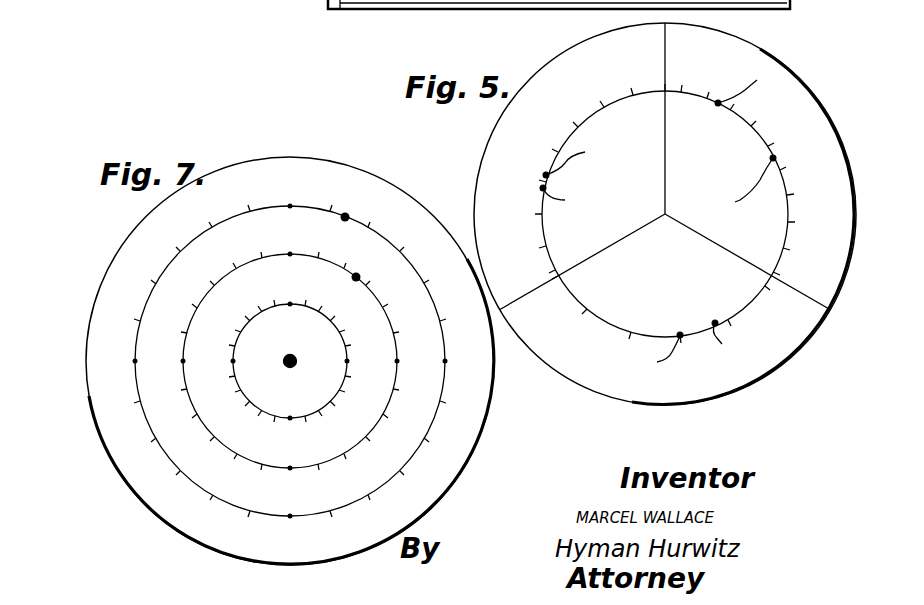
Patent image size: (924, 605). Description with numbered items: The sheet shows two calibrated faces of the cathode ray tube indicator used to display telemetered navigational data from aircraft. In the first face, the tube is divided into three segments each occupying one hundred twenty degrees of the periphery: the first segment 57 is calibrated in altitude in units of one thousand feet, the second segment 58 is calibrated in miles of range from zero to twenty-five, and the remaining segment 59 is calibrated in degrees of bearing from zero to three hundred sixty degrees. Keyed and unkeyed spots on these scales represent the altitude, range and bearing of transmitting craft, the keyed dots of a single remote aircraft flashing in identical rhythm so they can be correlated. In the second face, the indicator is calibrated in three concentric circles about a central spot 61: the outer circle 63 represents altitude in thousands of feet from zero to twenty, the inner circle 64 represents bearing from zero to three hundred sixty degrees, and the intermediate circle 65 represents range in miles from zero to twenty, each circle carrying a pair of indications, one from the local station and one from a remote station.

In FIG. 5, the first segment 57 is at (756, 178).
In FIG. 5, the second segment 58 is at (659, 315).
In FIG. 5, the bearing keying sector of disc 59 is at (574, 166).
In FIG. 7, the center of indicator screen 61 is at (296, 362).
In FIG. 7, the outer circle 63 is at (387, 238).
In FIG. 7, the inner circle 64 is at (337, 393).
In FIG. 7, the intermediate circle 65 is at (204, 298).